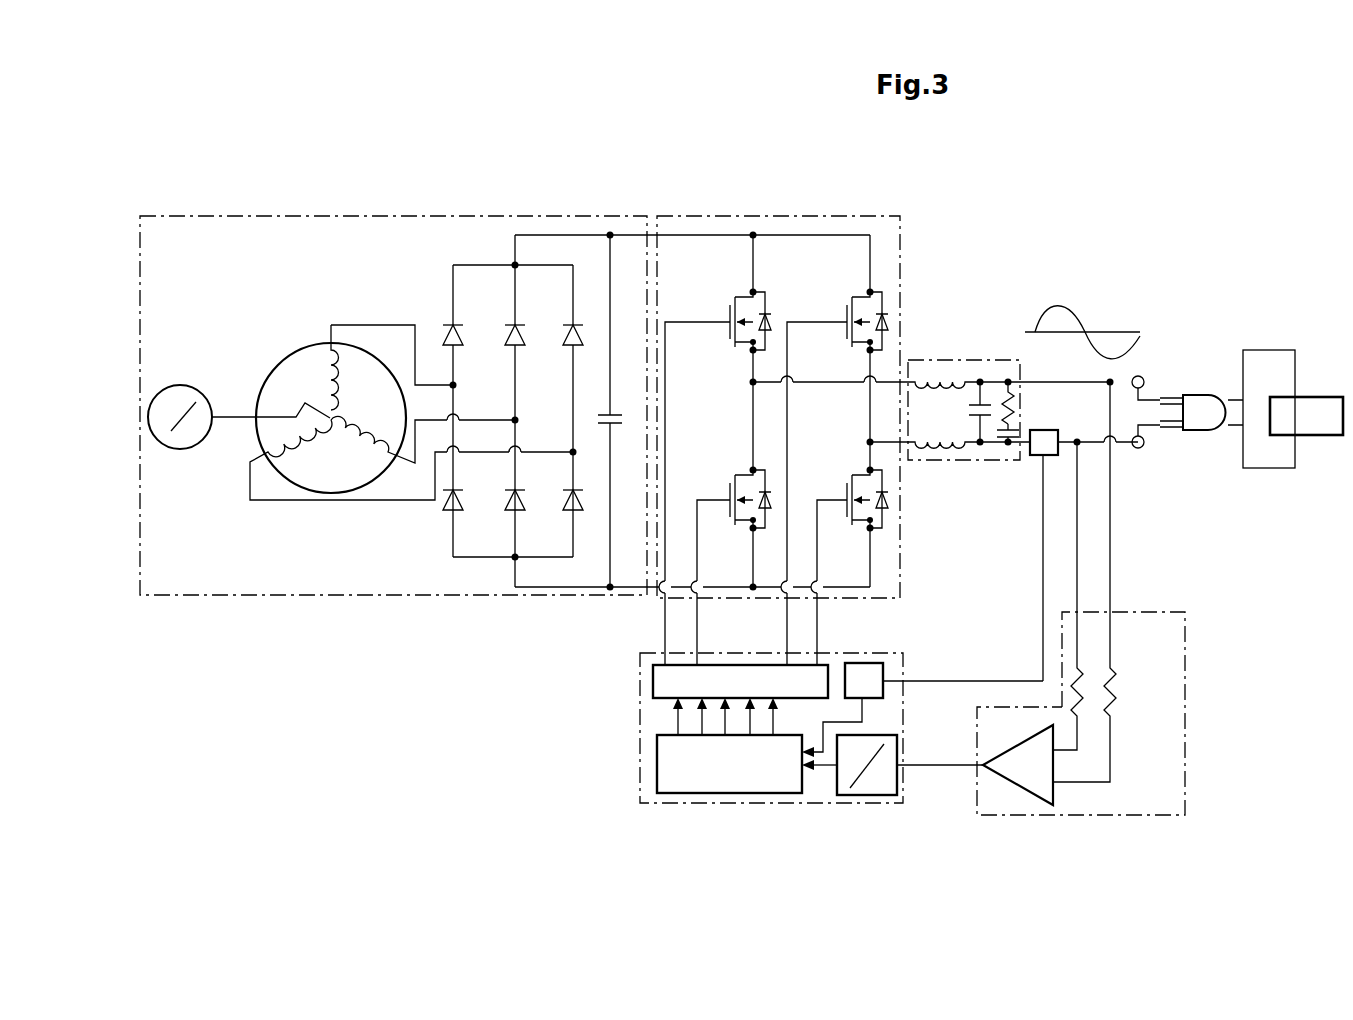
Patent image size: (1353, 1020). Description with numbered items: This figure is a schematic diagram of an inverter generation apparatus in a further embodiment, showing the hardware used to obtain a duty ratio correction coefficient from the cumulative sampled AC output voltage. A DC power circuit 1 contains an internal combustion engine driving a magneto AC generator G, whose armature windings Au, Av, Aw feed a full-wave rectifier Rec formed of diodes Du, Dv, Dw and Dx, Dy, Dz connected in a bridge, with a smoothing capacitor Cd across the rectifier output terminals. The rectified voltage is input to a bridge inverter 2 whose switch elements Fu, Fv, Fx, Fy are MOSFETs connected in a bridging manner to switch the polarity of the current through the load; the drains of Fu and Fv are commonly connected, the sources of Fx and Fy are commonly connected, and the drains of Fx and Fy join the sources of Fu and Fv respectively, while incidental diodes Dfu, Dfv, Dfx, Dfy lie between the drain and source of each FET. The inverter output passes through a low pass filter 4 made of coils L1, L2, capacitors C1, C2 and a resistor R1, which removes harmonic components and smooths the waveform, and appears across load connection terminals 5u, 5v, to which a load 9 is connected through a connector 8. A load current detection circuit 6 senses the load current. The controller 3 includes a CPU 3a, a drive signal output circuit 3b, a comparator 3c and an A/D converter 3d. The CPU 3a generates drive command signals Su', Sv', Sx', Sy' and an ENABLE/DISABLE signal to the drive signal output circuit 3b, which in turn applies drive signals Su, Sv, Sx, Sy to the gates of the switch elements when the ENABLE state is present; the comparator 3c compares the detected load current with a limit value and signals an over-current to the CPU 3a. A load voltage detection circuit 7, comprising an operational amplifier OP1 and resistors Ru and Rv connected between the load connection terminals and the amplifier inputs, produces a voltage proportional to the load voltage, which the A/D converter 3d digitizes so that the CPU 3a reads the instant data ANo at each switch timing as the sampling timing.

The DC power circuit 1 is at (336, 212).
The bridge inverter 2 is at (738, 210).
The controller 3 is at (834, 655).
The CPU 3a is at (812, 792).
The drive signal output circuit 3b is at (652, 682).
The comparator 3c is at (875, 662).
The A/D converter 3d is at (898, 750).
The filter 4 is at (952, 352).
The load connection terminal 5u is at (1142, 376).
The load connection terminal 5v is at (1141, 448).
The load current detection circuit 6 is at (1047, 430).
The load voltage detection circuit 7 is at (1145, 610).
The connector 8 is at (1204, 392).
The load 9 is at (1318, 395).
The magneto AC generator G is at (278, 360).
The armature winding U Au is at (325, 350).
The armature winding V Av is at (372, 435).
The armature winding W Aw is at (298, 438).
The full-wave rectifier Rec is at (463, 253).
The smoothing capacitor Cd is at (592, 412).
The diode Du is at (446, 328).
The diode Dv is at (508, 328).
The diode Dw is at (566, 328).
The diode Dx is at (446, 510).
The diode Dy is at (508, 508).
The diode Dz is at (566, 508).
The switch element Fu is at (740, 304).
The switch element Fv is at (875, 304).
The switch element Fx is at (733, 535).
The switch element Fy is at (881, 497).
The drive signal Su is at (718, 321).
The drive signal Sv is at (835, 321).
The drive signal Sx is at (723, 499).
The drive signal Sy is at (841, 499).
The incidental diode Dfu is at (768, 310).
The incidental diode Dfv is at (892, 330).
The incidental diode Dfx is at (769, 504).
The incidental diode Dfy is at (888, 500).
The coil L1 is at (938, 380).
The coil L2 is at (935, 450).
The capacitor C1 is at (965, 405).
The capacitor C2 is at (1006, 445).
The resistor R1 is at (1012, 410).
The resistor Rv is at (1070, 680).
The resistor Ru is at (1115, 695).
The operational amplifier OP1 is at (1018, 765).
The instant data ANo is at (930, 770).
The drive command signal Su' is at (661, 776).
The drive command signal Sv' is at (709, 776).
The drive command signal Sx' is at (740, 776).
The drive command signal Sy' is at (794, 776).